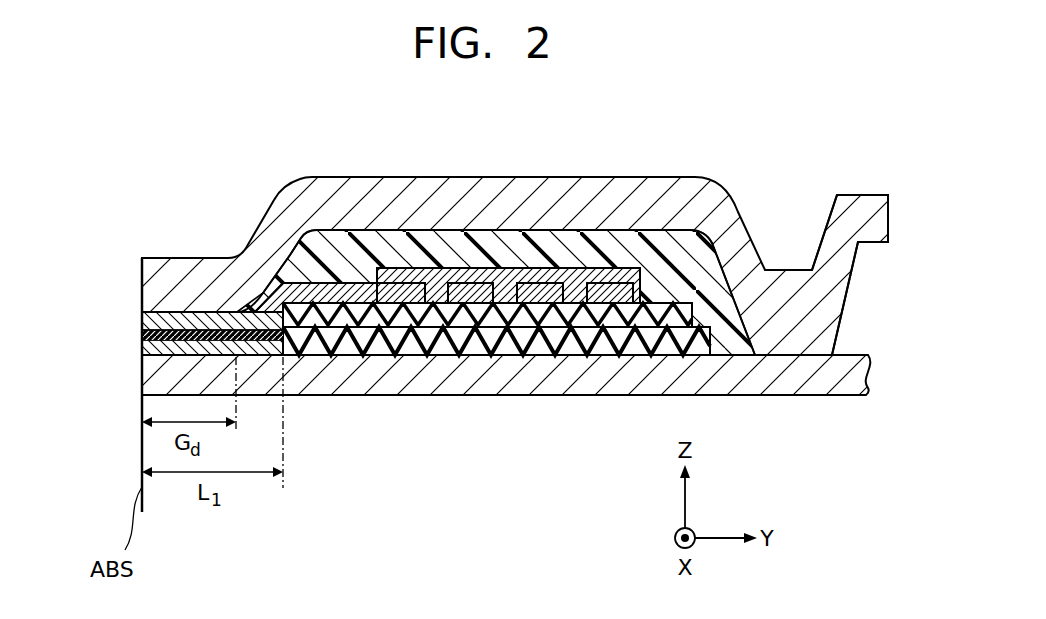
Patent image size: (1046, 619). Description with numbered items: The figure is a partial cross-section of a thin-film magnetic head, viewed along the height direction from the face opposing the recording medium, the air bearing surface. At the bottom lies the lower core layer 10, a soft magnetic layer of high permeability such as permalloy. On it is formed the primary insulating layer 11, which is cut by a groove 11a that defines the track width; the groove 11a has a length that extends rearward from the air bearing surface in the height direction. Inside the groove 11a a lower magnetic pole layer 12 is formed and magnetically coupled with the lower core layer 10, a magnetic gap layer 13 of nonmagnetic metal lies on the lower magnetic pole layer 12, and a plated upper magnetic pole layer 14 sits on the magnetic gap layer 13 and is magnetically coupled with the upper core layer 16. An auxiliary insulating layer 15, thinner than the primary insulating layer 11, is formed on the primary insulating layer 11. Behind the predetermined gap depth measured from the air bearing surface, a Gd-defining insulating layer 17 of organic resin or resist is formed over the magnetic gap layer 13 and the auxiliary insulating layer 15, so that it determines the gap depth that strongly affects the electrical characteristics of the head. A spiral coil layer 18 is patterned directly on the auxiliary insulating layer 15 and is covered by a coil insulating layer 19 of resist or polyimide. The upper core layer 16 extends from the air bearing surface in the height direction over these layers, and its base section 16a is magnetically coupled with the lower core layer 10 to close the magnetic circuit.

The lower core layer 10 is at (590, 373).
The primary insulating layer 11 is at (437, 337).
The groove 11a is at (192, 343).
The lower magnetic pole layer 12 is at (157, 348).
The magnetic gap layer 13 is at (148, 335).
The upper magnetic pole layer 14 is at (157, 322).
The auxiliary insulating layer 15 is at (507, 310).
The upper core layer 16 is at (405, 210).
The base section 16a is at (786, 292).
The Gd-defining insulating layer 17 is at (297, 292).
The coil layer 18 is at (510, 268).
The coil insulating layer 19 is at (677, 252).